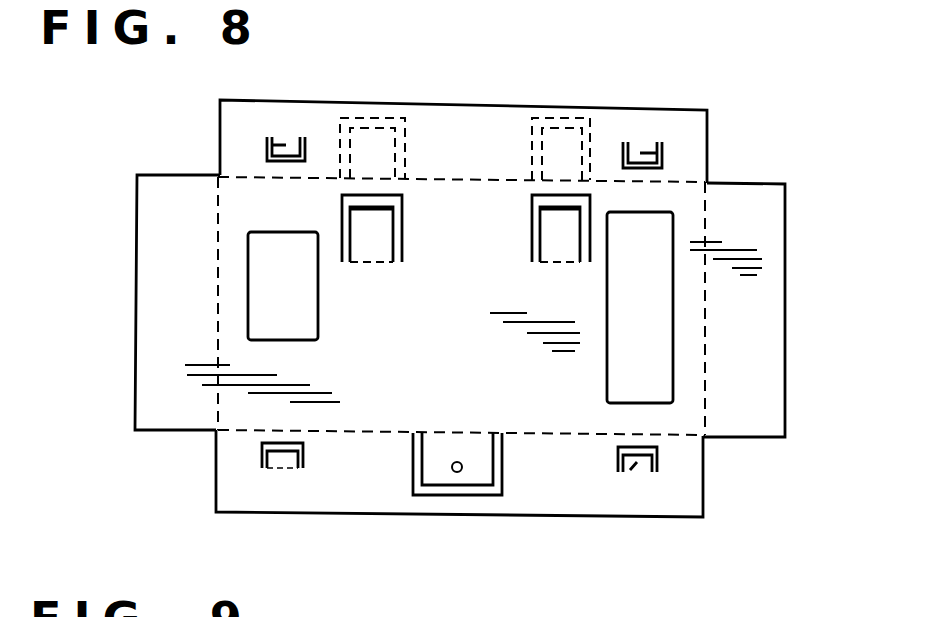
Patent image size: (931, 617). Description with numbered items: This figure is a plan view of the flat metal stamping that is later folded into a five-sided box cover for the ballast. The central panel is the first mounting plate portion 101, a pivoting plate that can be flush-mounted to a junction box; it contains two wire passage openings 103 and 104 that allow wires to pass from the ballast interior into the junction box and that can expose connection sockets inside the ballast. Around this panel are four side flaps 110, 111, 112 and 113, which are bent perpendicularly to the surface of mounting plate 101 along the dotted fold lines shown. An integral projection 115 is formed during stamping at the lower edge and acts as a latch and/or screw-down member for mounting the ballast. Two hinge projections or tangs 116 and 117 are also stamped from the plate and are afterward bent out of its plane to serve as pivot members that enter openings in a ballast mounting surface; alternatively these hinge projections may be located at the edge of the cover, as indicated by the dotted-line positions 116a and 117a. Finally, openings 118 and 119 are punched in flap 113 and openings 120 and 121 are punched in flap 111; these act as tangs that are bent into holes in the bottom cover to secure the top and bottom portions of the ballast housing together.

The first mounting plate portion 101 is at (448, 332).
The wire passage opening 103 is at (262, 277).
The wire passage opening 104 is at (608, 368).
The side flap 110 is at (153, 342).
The side flap 111 is at (470, 137).
The side flap 112 is at (745, 385).
The side flap 113 is at (350, 482).
The integral projection 115 is at (452, 482).
The hinge projection 116 is at (380, 238).
The dotted-line position of hinge projection 116a is at (333, 128).
The hinge projection 117 is at (568, 238).
The dotted-line position of hinge projection 117a is at (544, 118).
The opening 118 is at (262, 450).
The opening 119 is at (638, 467).
The opening 120 is at (267, 147).
The opening 121 is at (645, 153).